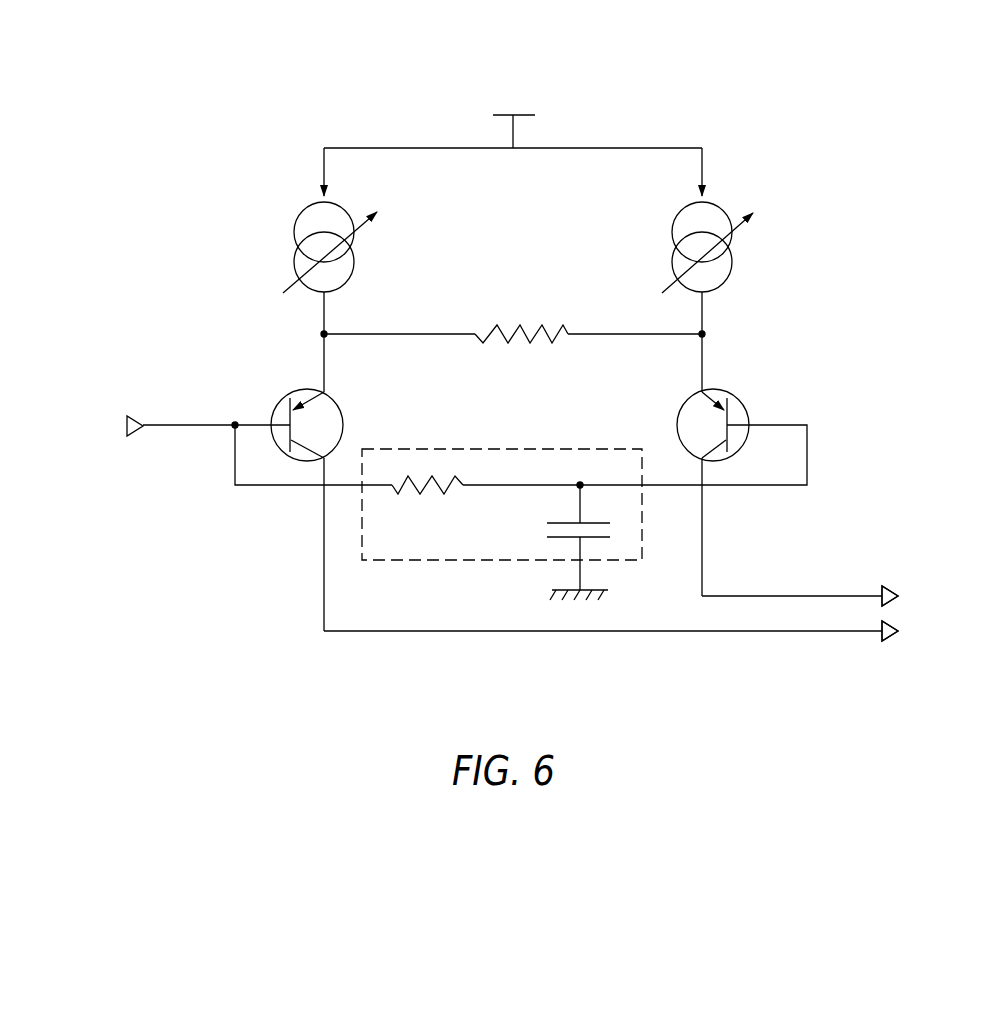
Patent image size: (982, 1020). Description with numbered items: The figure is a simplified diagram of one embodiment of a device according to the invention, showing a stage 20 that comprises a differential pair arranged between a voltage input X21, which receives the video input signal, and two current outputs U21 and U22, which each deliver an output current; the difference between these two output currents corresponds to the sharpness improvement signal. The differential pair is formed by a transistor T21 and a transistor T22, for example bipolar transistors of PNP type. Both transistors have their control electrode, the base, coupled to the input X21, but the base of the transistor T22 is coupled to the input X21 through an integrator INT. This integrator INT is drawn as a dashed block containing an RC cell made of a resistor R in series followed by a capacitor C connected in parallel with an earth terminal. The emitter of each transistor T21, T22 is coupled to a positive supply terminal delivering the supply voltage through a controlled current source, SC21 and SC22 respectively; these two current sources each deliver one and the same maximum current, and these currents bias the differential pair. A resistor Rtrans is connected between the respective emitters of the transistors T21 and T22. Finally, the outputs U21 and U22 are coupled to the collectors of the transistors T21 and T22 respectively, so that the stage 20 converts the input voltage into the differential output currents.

The stage 20 is at (198, 480).
The controlled current source SC21 is at (297, 215).
The controlled current source SC22 is at (713, 203).
The transistor T21 is at (279, 399).
The transistor T22 is at (740, 400).
The voltage input X21 is at (136, 416).
The integrator INT is at (452, 524).
The resistor R is at (427, 499).
The capacitor C is at (568, 537).
The resistor Rtrans is at (521, 320).
The current output U21 is at (893, 637).
The current output U22 is at (893, 591).